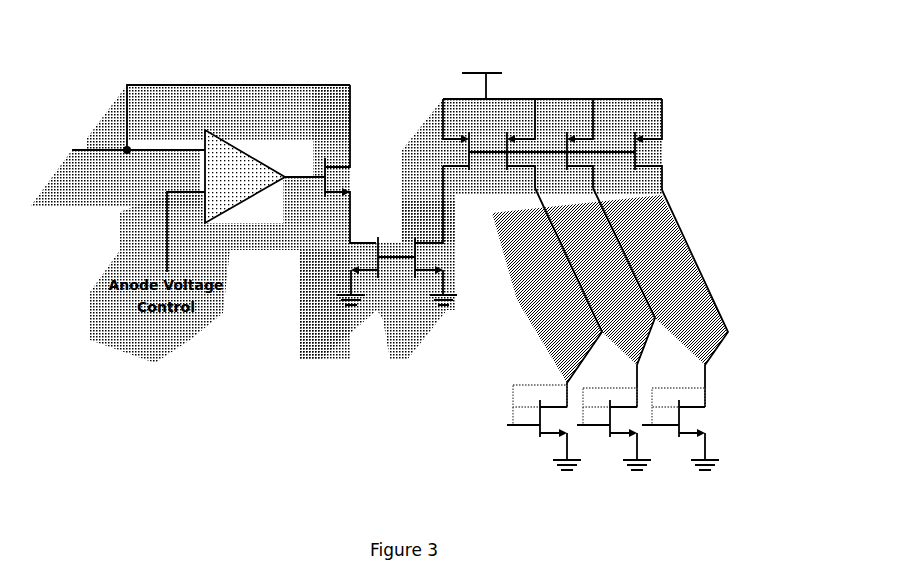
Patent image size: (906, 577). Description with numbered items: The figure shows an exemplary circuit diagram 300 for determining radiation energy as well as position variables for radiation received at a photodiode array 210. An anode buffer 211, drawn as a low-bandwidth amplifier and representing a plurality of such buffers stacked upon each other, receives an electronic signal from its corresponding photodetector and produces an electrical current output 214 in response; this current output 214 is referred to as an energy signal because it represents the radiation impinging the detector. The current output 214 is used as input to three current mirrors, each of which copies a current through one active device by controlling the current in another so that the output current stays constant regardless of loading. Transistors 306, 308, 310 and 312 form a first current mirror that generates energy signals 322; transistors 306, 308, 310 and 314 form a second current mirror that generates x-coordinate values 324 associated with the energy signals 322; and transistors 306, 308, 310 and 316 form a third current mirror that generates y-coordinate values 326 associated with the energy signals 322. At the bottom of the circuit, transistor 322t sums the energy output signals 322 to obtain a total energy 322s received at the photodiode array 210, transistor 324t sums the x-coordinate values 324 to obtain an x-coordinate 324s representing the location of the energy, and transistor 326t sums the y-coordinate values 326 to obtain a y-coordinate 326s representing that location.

The photodiode array 210 is at (80, 145).
The anode buffer 211 is at (228, 140).
The current output 214 is at (302, 168).
The circuit diagram 300 is at (744, 98).
The transistor 306 is at (365, 263).
The transistor 308 is at (417, 257).
The transistor 310 is at (441, 136).
The transistor 312 is at (506, 138).
The transistor 314 is at (568, 138).
The transistor 316 is at (633, 138).
The energy signals 322 is at (560, 302).
The x-coordinate values 324 is at (630, 263).
The y-coordinate values 326 is at (715, 303).
The total energy 322s is at (510, 428).
The transistor 322t is at (538, 431).
The x-coordinate 324s is at (589, 427).
The transistor 324t is at (616, 437).
The y-coordinate 326s is at (660, 427).
The transistor 326t is at (687, 439).